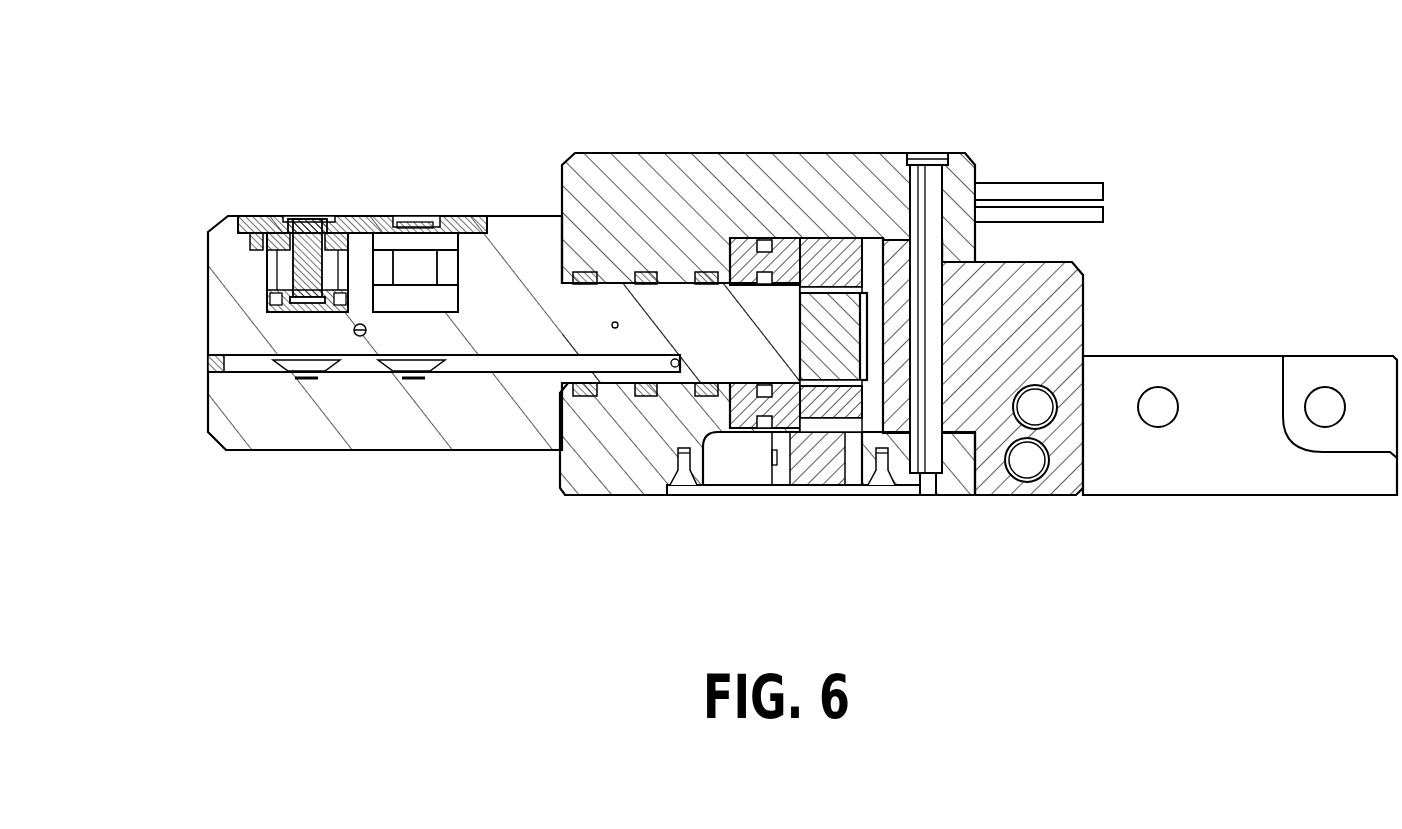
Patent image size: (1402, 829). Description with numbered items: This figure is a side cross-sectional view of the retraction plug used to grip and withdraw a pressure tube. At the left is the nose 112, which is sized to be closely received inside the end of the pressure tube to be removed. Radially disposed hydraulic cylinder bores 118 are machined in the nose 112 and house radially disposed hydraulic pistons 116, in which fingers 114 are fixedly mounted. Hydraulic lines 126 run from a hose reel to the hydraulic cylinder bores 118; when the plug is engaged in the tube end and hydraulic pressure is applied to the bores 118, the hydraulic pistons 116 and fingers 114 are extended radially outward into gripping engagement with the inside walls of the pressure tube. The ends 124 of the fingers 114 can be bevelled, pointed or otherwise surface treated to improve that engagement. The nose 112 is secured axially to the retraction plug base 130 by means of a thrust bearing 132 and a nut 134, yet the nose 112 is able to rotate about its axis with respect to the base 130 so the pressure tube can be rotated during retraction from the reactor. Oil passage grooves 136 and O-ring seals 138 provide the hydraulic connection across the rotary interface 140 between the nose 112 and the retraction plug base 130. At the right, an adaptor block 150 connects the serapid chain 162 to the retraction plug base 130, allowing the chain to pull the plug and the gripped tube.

The nose 112 is at (358, 428).
The fingers 114 is at (300, 222).
The hydraulic pistons 116 is at (338, 220).
The hydraulic cylinder bores 118 is at (358, 268).
The ends of fingers 124 is at (310, 220).
The hydraulic lines 126 is at (1108, 190).
The retraction plug base 130 is at (677, 177).
The thrust bearing 132 is at (742, 250).
The nut 134 is at (828, 245).
The oil passage grooves 136 is at (623, 395).
The O-ring seals 138 is at (648, 397).
The rotary interface 140 is at (583, 290).
The adaptor block 150 is at (1072, 302).
The serapid chain 162 is at (1142, 356).